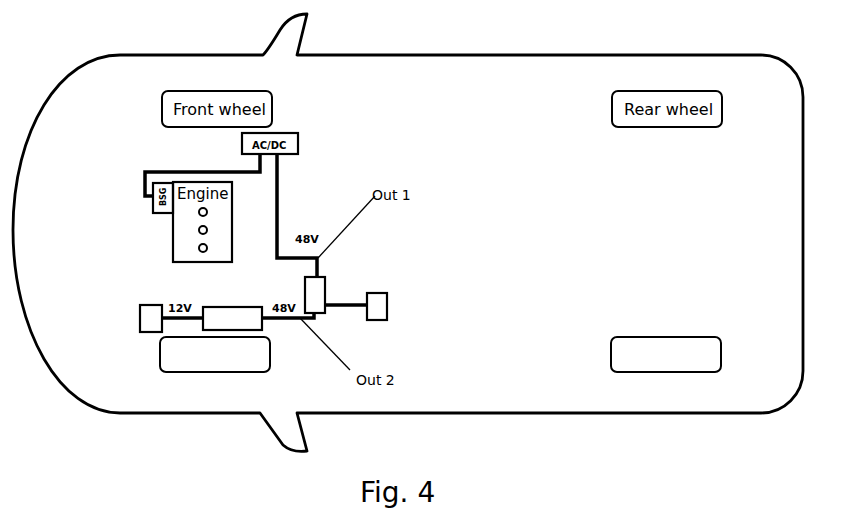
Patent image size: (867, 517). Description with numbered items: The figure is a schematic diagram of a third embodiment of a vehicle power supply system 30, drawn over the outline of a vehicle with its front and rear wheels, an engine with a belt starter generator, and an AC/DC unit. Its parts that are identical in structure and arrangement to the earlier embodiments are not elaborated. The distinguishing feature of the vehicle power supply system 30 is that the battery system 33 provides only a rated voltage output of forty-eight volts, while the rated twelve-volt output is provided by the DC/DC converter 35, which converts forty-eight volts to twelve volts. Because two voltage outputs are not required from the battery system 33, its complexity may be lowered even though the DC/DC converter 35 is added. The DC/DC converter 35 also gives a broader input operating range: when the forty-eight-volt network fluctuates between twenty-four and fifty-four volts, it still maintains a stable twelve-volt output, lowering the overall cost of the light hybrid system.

The vehicle power supply system 30 is at (405, 311).
The battery system 33 is at (325, 278).
The DC/DC converter 35 is at (205, 306).